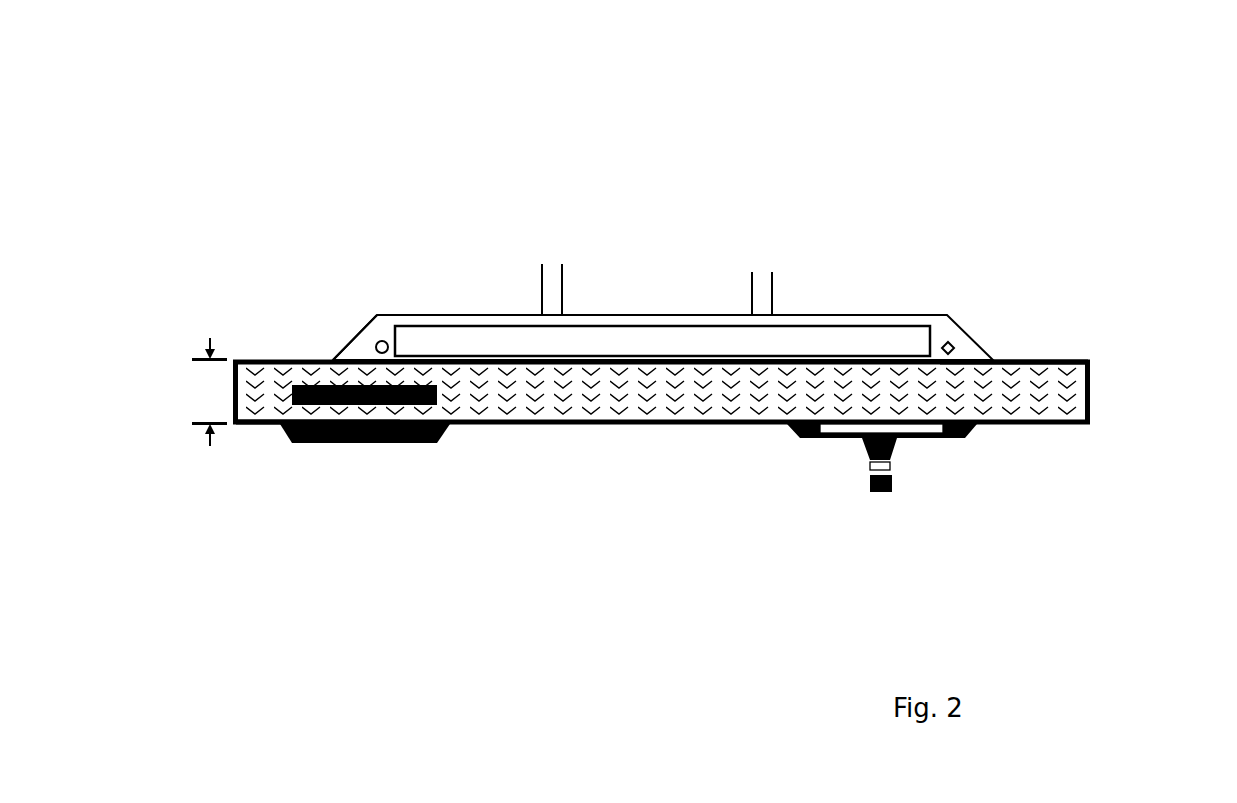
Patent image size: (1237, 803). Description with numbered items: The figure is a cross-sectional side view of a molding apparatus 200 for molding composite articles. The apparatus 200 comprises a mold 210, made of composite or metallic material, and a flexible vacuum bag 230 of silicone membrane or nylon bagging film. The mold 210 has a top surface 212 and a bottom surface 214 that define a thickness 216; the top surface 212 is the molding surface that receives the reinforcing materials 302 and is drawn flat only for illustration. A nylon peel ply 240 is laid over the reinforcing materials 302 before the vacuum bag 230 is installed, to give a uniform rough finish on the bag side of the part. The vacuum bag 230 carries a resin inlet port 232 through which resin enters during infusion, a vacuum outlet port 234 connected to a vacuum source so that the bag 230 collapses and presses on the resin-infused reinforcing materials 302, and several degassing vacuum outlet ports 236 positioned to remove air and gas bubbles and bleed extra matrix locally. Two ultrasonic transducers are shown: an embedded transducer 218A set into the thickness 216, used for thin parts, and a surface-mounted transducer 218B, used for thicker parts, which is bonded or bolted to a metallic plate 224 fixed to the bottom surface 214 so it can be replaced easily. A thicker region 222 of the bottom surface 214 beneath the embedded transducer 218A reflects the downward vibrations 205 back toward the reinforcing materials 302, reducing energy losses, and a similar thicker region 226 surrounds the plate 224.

The molding apparatus 200 is at (972, 141).
The vibrations 205 is at (988, 410).
The mold 210 is at (1090, 365).
The top surface 212 is at (1025, 362).
The bottom surface 214 is at (260, 425).
The thickness 216 is at (198, 392).
The embedded transducer 218A is at (433, 402).
The surface-mounted transducer 218B is at (860, 473).
The thicker region 222 is at (362, 447).
The metallic plate 224 is at (915, 433).
The thicker region around plate 226 is at (957, 435).
The vacuum bag 230 is at (337, 345).
The resin inlet port 232 is at (376, 340).
The vacuum outlet port 234 is at (953, 343).
The degassing vacuum outlet ports 236 is at (762, 263).
The peel ply 240 is at (498, 320).
The reinforcing materials 302 is at (870, 347).